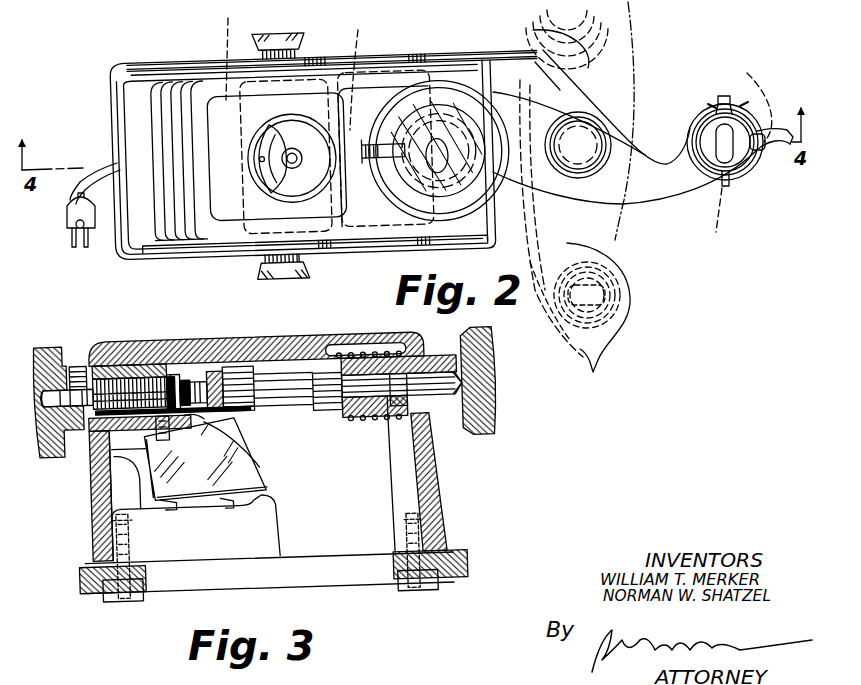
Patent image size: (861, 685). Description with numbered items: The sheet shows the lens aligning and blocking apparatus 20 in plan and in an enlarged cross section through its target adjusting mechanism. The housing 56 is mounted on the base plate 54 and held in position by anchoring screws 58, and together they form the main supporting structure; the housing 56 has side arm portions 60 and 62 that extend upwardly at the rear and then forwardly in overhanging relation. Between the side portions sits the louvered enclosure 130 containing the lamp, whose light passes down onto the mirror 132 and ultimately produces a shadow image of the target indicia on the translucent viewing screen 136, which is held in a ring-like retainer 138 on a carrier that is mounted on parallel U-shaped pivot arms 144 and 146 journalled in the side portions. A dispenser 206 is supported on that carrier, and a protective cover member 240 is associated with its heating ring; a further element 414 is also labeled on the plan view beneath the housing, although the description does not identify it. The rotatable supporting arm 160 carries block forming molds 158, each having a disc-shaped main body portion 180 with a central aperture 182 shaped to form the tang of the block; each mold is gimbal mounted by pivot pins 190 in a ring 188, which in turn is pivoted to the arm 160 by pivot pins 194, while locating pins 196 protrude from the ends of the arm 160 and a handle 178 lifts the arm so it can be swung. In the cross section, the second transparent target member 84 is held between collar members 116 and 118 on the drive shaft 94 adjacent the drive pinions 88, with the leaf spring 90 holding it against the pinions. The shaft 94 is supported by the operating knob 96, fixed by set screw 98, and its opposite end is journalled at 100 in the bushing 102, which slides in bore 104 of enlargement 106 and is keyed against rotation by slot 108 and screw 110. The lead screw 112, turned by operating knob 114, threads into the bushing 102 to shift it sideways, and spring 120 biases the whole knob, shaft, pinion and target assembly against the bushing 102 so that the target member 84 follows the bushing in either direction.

In FIG. 2, the lens aligning and blocking apparatus 20 is at (188, 42).
In FIG. 2, the louvered enclosure 130 is at (155, 128).
In FIG. 2, the protective cover member 240 is at (210, 140).
In FIG. 2, the pivot arm 144 is at (230, 53).
In FIG. 2, the pivot arm 146 is at (354, 71).
In FIG. 2, the operating knob 96 is at (283, 30).
In FIG. 3, the operating knob 96 is at (497, 409).
In FIG. 2, the lower knob 414 is at (283, 274).
In FIG. 2, the side arm portion 62 is at (393, 63).
In FIG. 2, the dispenser 206 is at (265, 203).
In FIG. 2, the ring-like retainer 138 is at (433, 90).
In FIG. 2, the viewing screen 136 is at (453, 110).
In FIG. 2, the base plate 54 is at (522, 58).
In FIG. 3, the base plate 54 is at (360, 583).
In FIG. 2, the supporting arm 160 is at (640, 56).
In FIG. 2, the handle 178 is at (587, 135).
In FIG. 2, the ring 188 is at (705, 118).
In FIG. 2, the disc-shaped main body portion 180 is at (741, 152).
In FIG. 2, the aperture 182 is at (723, 124).
In FIG. 2, the pivot pin 194 is at (748, 153).
In FIG. 2, the pivot pin 190 is at (760, 124).
In FIG. 2, the locating pin 196 is at (768, 152).
In FIG. 2, the block forming mold 158 is at (690, 215).
In FIG. 2, the side arm portion 60 is at (378, 244).
In FIG. 3, the operating knob 114 is at (47, 353).
In FIG. 3, the lead screw 112 is at (83, 350).
In FIG. 3, the housing 56 is at (437, 493).
In FIG. 3, the bore 104 is at (110, 368).
In FIG. 3, the bushing 102 is at (160, 370).
In FIG. 3, the journal 100 is at (190, 368).
In FIG. 3, the collar member 116 is at (215, 370).
In FIG. 3, the second transparent target member 84 is at (243, 365).
In FIG. 3, the drive shaft 94 is at (270, 370).
In FIG. 3, the leaf spring 90 is at (272, 376).
In FIG. 3, the collar member 118 is at (335, 350).
In FIG. 3, the spring 120 is at (362, 348).
In FIG. 3, the drive pinion 88 is at (241, 412).
In FIG. 3, the set screw 98 is at (437, 418).
In FIG. 3, the enlargement 106 is at (112, 455).
In FIG. 3, the mirror 132 is at (264, 490).
In FIG. 3, the slot 108 is at (257, 467).
In FIG. 3, the screw 110 is at (192, 470).
In FIG. 3, the anchoring screw 58 is at (430, 527).